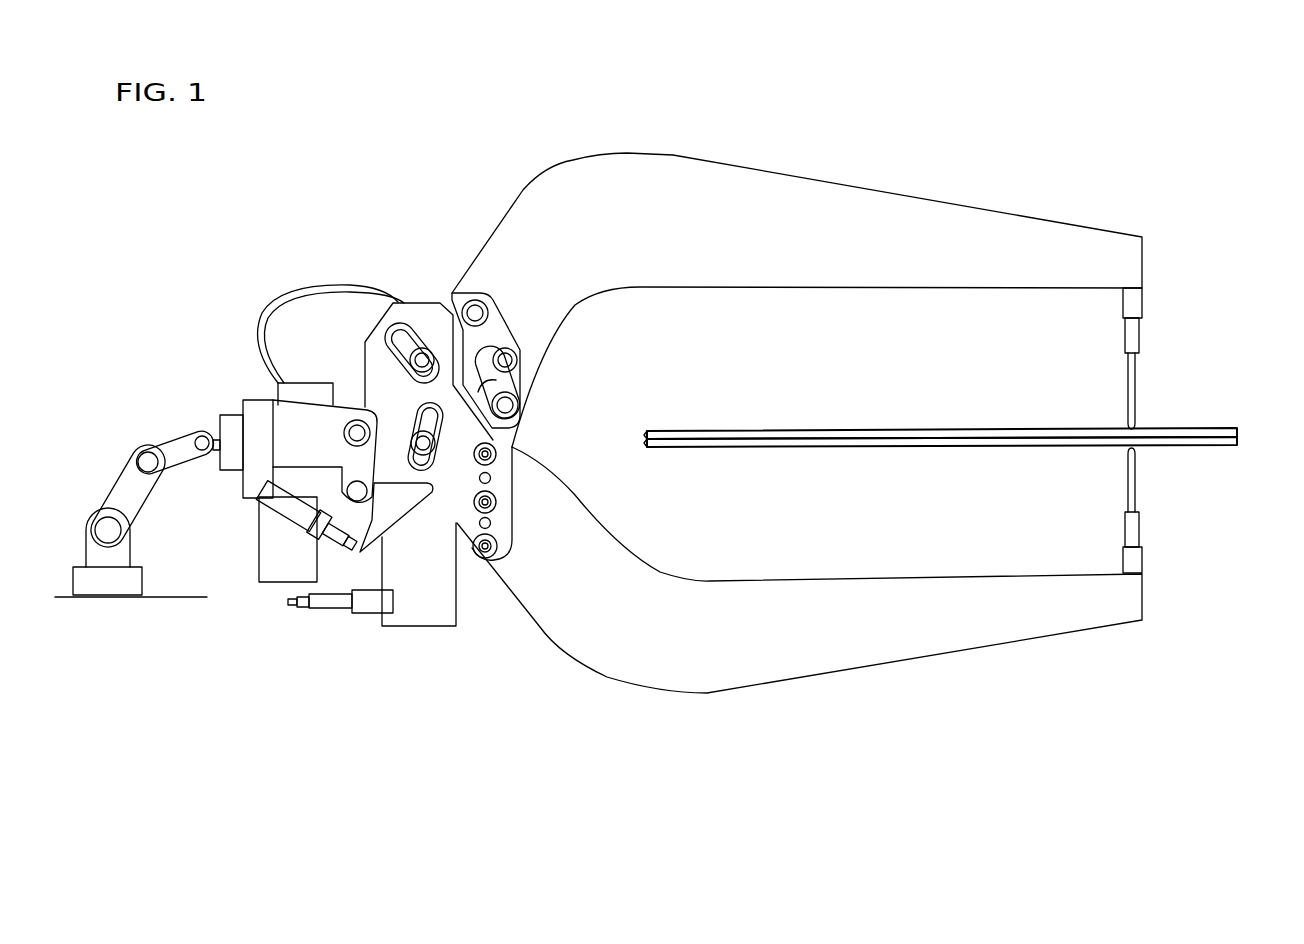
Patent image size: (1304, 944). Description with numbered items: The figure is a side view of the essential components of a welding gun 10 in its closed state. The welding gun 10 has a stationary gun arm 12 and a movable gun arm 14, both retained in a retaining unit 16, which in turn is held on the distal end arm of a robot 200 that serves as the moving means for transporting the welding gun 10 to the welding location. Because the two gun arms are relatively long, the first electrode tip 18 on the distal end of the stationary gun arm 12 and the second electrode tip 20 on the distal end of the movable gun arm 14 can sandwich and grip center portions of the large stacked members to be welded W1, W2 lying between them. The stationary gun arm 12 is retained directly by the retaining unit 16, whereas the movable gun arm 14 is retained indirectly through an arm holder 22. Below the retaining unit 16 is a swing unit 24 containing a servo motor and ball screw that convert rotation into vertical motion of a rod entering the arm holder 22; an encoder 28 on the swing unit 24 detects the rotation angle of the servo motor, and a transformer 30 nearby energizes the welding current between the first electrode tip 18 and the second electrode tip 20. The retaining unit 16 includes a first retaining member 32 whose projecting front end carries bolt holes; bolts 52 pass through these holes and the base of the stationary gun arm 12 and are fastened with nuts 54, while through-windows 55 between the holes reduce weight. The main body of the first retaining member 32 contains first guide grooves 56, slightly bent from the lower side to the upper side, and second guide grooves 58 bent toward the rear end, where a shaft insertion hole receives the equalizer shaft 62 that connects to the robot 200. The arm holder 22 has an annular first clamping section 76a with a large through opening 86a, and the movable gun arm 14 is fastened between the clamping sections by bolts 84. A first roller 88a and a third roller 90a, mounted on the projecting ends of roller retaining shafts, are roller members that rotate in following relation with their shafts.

The welding gun 10 is at (253, 131).
The stationary gun arm 12 is at (914, 658).
The movable gun arm 14 is at (953, 220).
The retaining unit 16 is at (362, 345).
The first electrode tip 18 is at (1132, 492).
The second electrode tip 20 is at (1132, 392).
The arm holder 22 is at (513, 330).
The swing unit 24 is at (462, 633).
The encoder 28 is at (365, 610).
The transformer 30 is at (270, 546).
The first retaining member 32 is at (503, 468).
The bolts 52 is at (493, 448).
The nuts 54 is at (496, 452).
The through-windows 55 is at (491, 479).
The first guide grooves 56 is at (425, 413).
The second guide grooves 58 is at (410, 347).
The equalizer shaft 62 is at (345, 433).
The first clamping section 76a is at (504, 398).
The bolts 84 is at (478, 305).
The through opening 86a is at (508, 380).
The first roller 88a is at (430, 442).
The third roller 90a is at (416, 360).
The robot 200 is at (179, 430).
The member to be welded W1 is at (903, 447).
The member to be welded W2 is at (851, 437).